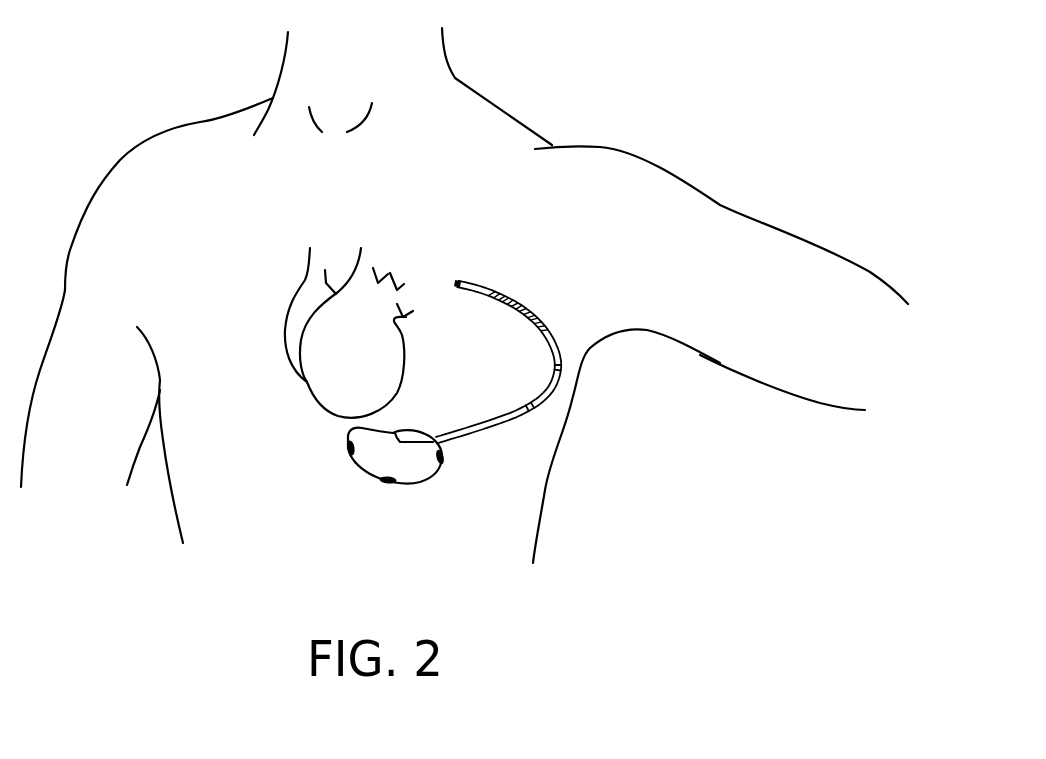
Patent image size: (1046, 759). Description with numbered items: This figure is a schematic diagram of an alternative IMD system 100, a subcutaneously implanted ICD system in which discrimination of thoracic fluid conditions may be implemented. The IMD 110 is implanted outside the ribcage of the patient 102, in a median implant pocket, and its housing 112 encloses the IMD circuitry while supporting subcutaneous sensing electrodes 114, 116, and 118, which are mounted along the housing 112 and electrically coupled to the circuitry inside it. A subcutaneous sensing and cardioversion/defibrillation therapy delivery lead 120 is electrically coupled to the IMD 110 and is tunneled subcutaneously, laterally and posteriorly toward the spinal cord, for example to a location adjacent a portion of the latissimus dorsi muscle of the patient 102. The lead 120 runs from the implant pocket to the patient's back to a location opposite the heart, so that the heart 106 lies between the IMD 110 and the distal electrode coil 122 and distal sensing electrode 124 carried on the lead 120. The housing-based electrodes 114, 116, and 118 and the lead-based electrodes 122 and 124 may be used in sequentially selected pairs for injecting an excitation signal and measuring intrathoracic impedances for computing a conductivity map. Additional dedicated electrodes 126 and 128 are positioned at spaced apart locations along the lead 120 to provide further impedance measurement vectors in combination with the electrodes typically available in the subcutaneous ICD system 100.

The IMD system 100 is at (418, 160).
The patient 102 is at (178, 476).
The heart 106 is at (316, 376).
The IMD 110 is at (384, 480).
The housing 112 is at (365, 463).
The subcutaneous sensing electrode 114 is at (346, 452).
The subcutaneous sensing electrode 116 is at (388, 484).
The subcutaneous sensing electrode 118 is at (446, 459).
The subcutaneous sensing and cardioversion/defibrillation therapy delivery lead 120 is at (539, 353).
The distal electrode coil 122 is at (498, 297).
The distal sensing electrode 124 is at (457, 282).
The dedicated electrode 126 is at (532, 409).
The dedicated electrode 128 is at (562, 366).